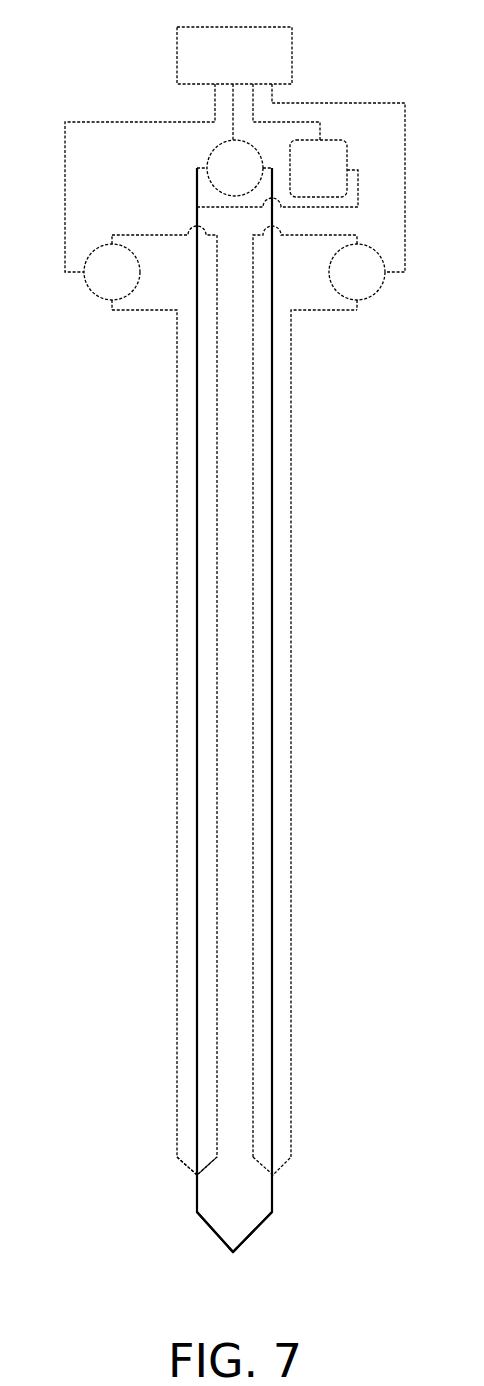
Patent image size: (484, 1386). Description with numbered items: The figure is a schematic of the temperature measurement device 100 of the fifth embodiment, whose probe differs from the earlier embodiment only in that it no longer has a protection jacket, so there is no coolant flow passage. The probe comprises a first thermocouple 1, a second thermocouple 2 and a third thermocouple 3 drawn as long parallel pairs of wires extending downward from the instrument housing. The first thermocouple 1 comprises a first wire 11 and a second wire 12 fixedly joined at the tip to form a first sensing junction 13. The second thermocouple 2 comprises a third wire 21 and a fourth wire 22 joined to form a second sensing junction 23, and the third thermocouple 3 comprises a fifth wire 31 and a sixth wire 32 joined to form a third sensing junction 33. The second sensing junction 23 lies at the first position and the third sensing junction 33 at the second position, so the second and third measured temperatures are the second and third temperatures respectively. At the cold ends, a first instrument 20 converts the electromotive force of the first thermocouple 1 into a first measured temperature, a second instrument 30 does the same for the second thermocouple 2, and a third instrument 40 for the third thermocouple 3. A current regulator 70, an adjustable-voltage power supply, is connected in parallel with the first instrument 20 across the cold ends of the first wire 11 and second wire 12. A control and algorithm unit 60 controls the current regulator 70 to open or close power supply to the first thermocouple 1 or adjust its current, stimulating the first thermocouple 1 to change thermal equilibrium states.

The temperature measurement device 100 is at (130, 28).
The control and algorithm unit 60 is at (262, 57).
The current regulator 70 is at (305, 170).
The first instrument 20 is at (222, 168).
The second instrument 30 is at (112, 265).
The third instrument 40 is at (358, 265).
The first thermocouple 1 is at (195, 218).
The first wire 11 is at (212, 1232).
The second wire 12 is at (255, 1232).
The first sensing junction 13 is at (237, 1255).
The second thermocouple 2 is at (147, 721).
The third wire 21 is at (177, 520).
The fourth wire 22 is at (215, 507).
The second sensing junction 23 is at (197, 1175).
The third thermocouple 3 is at (322, 721).
The fifth wire 31 is at (253, 508).
The sixth wire 32 is at (291, 520).
The third sensing junction 33 is at (273, 1175).